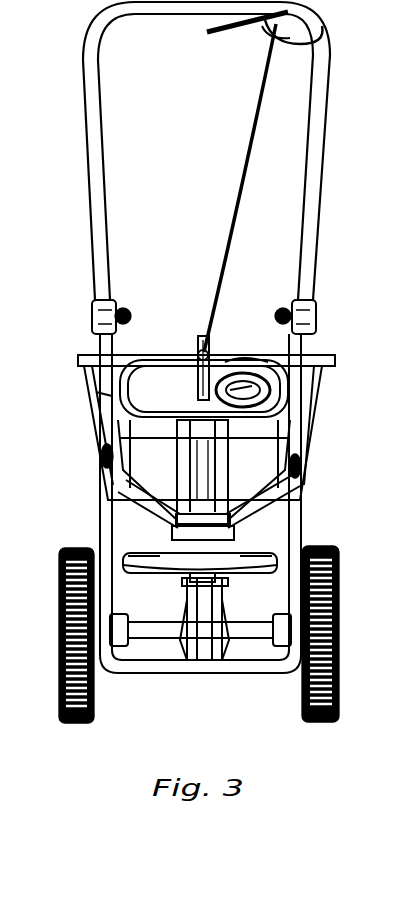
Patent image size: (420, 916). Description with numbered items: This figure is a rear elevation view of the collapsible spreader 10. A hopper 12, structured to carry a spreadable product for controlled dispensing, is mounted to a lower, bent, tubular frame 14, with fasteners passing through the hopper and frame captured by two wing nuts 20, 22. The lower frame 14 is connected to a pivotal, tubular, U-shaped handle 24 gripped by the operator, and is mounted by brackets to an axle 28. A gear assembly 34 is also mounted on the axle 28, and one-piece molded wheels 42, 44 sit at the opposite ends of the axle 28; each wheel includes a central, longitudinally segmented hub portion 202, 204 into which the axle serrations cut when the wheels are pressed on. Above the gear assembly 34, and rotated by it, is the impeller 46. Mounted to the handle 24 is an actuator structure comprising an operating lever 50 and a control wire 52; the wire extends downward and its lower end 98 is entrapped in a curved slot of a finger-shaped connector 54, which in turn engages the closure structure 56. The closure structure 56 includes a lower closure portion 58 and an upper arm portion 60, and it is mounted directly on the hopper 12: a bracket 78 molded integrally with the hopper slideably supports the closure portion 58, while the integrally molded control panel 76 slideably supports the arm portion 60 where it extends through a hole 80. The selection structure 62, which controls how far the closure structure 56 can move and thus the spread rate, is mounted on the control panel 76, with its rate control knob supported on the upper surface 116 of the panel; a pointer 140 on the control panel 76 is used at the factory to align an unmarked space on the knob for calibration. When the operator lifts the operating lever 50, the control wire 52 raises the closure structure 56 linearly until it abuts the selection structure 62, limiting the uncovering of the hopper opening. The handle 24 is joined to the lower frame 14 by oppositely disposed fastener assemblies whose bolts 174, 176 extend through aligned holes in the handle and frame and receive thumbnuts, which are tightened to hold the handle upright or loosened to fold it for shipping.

The collapsible spreader 10 is at (66, 168).
The hopper 12 is at (88, 386).
The lower frame 14 is at (104, 540).
The wing nut 20 is at (98, 458).
The wing nut 22 is at (303, 478).
The handle 24 is at (318, 98).
The axle 28 is at (162, 675).
The gear assembly 34 is at (208, 618).
The wheel 42 is at (339, 657).
The wheel 44 is at (59, 650).
The impeller 46 is at (130, 575).
The operating lever 50 is at (212, 40).
The control wire 52 is at (247, 152).
The connector 54 is at (215, 346).
The closure structure 56 is at (302, 470).
The closure portion 58 is at (182, 490).
The arm portion 60 is at (218, 362).
The selection structure 62 is at (282, 390).
The control panel 76 is at (168, 362).
The bracket 78 is at (250, 548).
The hole 80 is at (186, 394).
The lower end 98 is at (200, 348).
The upper surface 116 is at (106, 398).
The pointer 140 is at (246, 360).
The bolt 174 is at (94, 322).
The bolt 176 is at (312, 316).
The hub portion 202 is at (252, 676).
The hub portion 204 is at (110, 676).